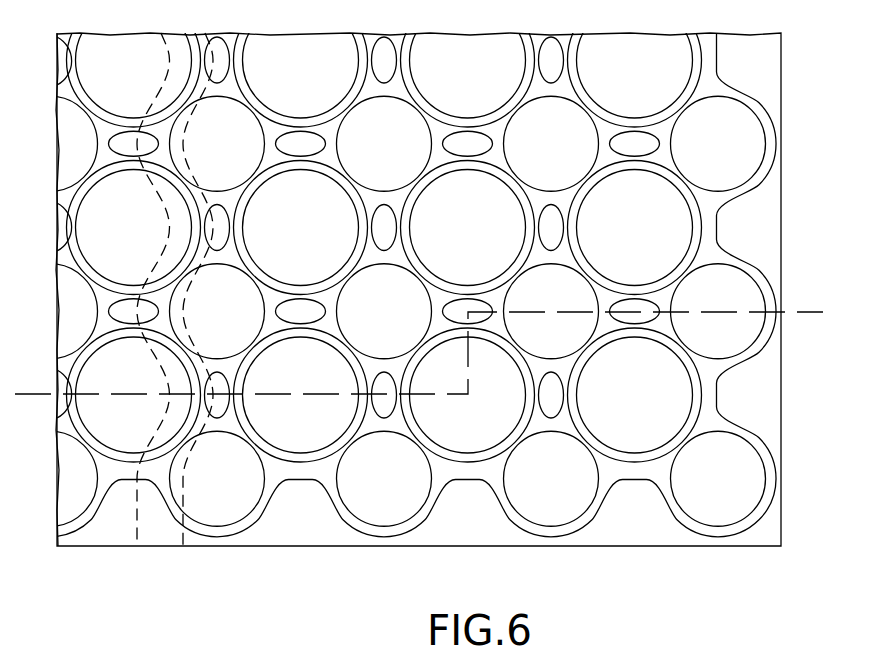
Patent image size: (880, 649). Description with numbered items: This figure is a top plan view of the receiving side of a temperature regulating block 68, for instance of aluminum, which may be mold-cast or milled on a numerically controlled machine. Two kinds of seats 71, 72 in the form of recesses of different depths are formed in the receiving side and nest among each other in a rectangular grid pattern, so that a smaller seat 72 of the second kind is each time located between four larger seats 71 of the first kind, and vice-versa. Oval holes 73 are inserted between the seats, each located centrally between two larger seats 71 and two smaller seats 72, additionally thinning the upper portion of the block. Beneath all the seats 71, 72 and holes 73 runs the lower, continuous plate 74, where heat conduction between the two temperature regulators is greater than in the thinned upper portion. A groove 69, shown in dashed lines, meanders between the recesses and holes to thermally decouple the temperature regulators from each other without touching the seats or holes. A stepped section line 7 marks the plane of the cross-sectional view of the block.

The temperature regulating block 68 is at (784, 424).
The groove 69 is at (168, 88).
The seat of the first kind 71 is at (120, 248).
The seat of the second kind 72 is at (227, 500).
The oval hole 73 is at (125, 162).
The continuous plate 74 is at (307, 528).
The section line 7- 7 is at (24, 398).